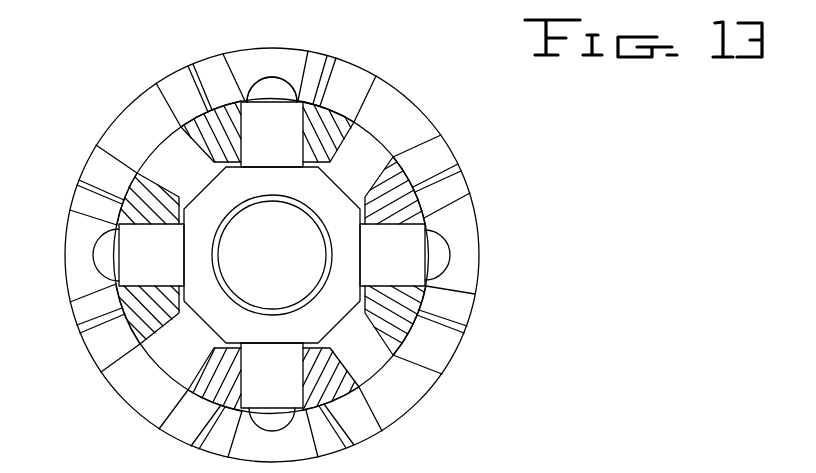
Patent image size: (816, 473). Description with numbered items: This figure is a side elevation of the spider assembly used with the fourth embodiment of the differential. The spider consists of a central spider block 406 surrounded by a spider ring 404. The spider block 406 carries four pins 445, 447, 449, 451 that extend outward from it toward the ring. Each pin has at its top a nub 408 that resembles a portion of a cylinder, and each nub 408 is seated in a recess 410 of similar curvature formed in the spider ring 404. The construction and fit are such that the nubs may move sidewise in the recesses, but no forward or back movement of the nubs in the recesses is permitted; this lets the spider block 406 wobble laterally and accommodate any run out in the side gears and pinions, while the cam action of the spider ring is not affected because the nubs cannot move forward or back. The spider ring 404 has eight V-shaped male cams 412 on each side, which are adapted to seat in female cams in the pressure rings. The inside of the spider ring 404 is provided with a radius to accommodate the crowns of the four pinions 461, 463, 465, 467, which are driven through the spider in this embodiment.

The spider ring 404 is at (479, 248).
The spider block 406 is at (325, 203).
The nub 408 is at (249, 83).
The recess 410 is at (277, 78).
The V-shaped male cam 412 is at (462, 305).
The pin 445 is at (170, 265).
The pin 447 is at (293, 150).
The pin 449 is at (414, 268).
The pin 451 is at (293, 390).
The pinion 461 is at (128, 300).
The pinion 463 is at (308, 52).
The pinion 465 is at (442, 206).
The pinion 467 is at (346, 448).